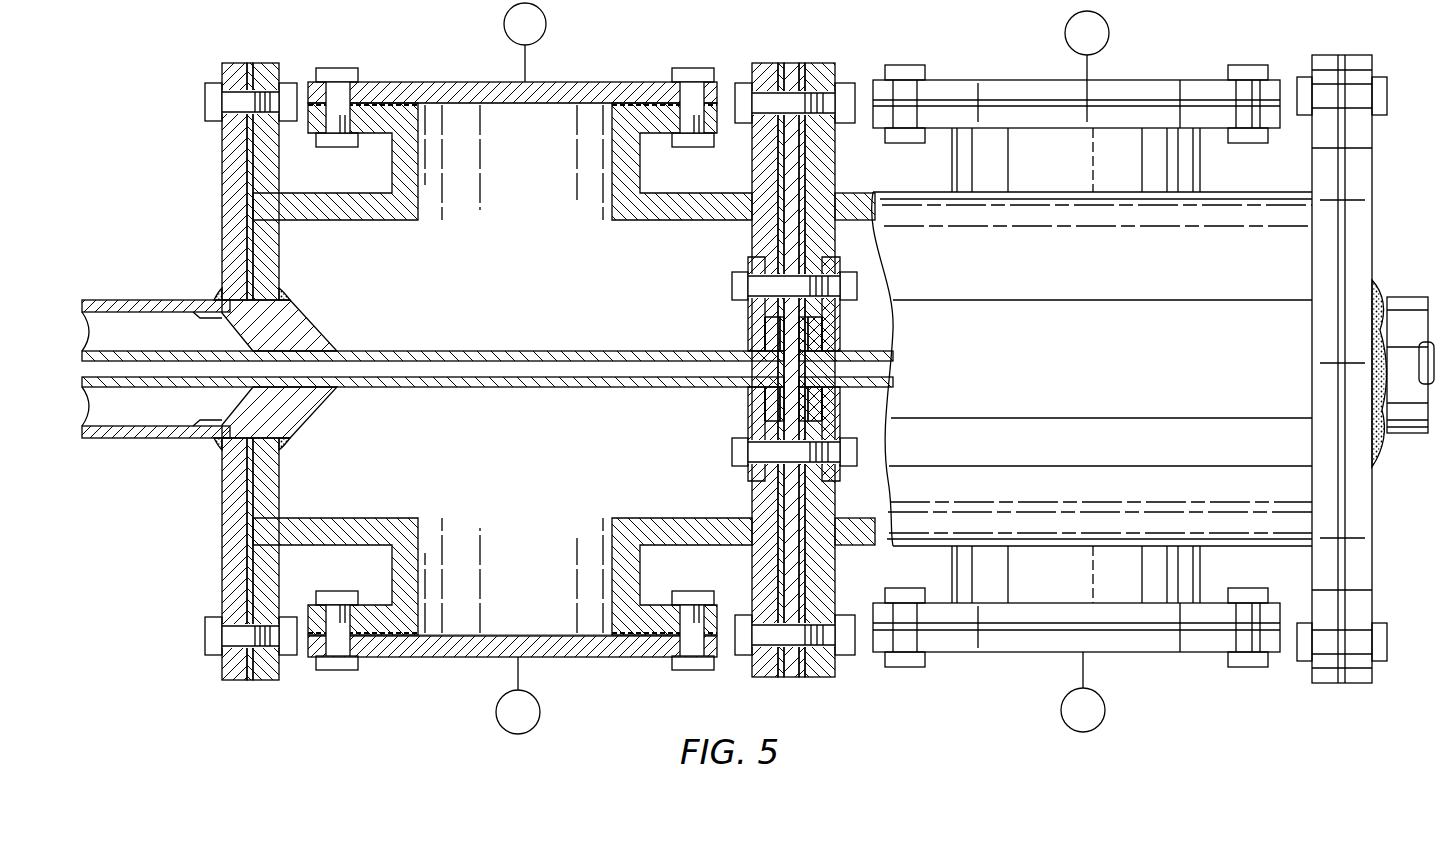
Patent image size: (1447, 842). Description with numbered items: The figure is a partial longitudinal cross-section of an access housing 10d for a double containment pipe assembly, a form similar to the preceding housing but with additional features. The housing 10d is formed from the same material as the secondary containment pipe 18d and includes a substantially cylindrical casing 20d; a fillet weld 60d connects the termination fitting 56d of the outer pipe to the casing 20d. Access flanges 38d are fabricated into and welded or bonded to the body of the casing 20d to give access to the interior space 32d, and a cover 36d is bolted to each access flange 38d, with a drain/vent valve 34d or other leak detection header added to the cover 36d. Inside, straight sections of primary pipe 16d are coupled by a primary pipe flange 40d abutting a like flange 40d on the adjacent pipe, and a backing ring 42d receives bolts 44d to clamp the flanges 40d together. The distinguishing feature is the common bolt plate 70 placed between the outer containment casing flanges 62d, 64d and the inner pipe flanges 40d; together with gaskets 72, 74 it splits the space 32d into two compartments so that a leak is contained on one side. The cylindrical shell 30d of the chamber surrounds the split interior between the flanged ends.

The housing 10d is at (1407, 196).
The primary pipe 16d is at (541, 352).
The secondary containment pipe 18d is at (148, 434).
The casing 20d is at (1218, 546).
The chamber shell 30d is at (565, 128).
The space 32d is at (556, 448).
The drain/vent valve 34d is at (1065, 38).
The cover 36d is at (1163, 90).
The access flange 38d is at (415, 176).
The primary pipe flange 40d is at (813, 340).
The backing ring 42d is at (758, 331).
The bolt 44d is at (762, 452).
The termination fitting 56d is at (308, 333).
The fillet weld 60d is at (216, 296).
The outer containment casing flange 62d is at (764, 72).
The outer containment casing flange 64d is at (819, 72).
The common bolt plate 70 is at (790, 240).
The gasket 72 is at (762, 164).
The gasket 74 is at (770, 323).